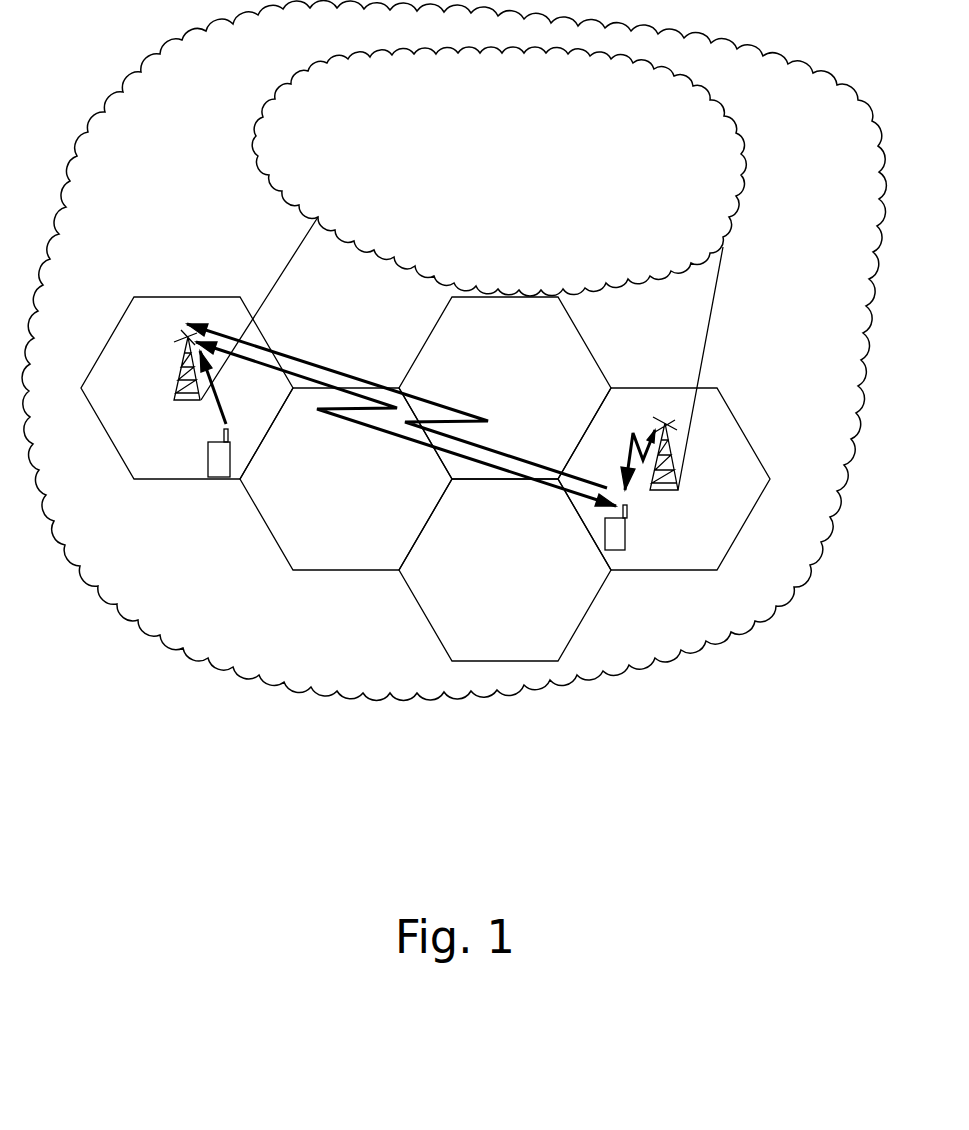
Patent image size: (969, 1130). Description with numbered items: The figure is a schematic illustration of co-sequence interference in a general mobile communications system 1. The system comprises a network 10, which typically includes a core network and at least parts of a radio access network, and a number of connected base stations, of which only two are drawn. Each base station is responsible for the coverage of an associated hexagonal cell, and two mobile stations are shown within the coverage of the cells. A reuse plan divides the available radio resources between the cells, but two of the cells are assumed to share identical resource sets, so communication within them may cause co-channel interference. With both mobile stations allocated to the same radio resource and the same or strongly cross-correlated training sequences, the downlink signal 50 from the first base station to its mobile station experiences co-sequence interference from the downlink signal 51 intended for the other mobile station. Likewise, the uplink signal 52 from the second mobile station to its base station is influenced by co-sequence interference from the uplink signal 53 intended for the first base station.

The mobile communications system 1 is at (728, 625).
The network 10 is at (730, 182).
The downlink signal 50 is at (632, 432).
The downlink signal 51 is at (363, 427).
The uplink signal 52 is at (221, 404).
The uplink signal 53 is at (325, 360).